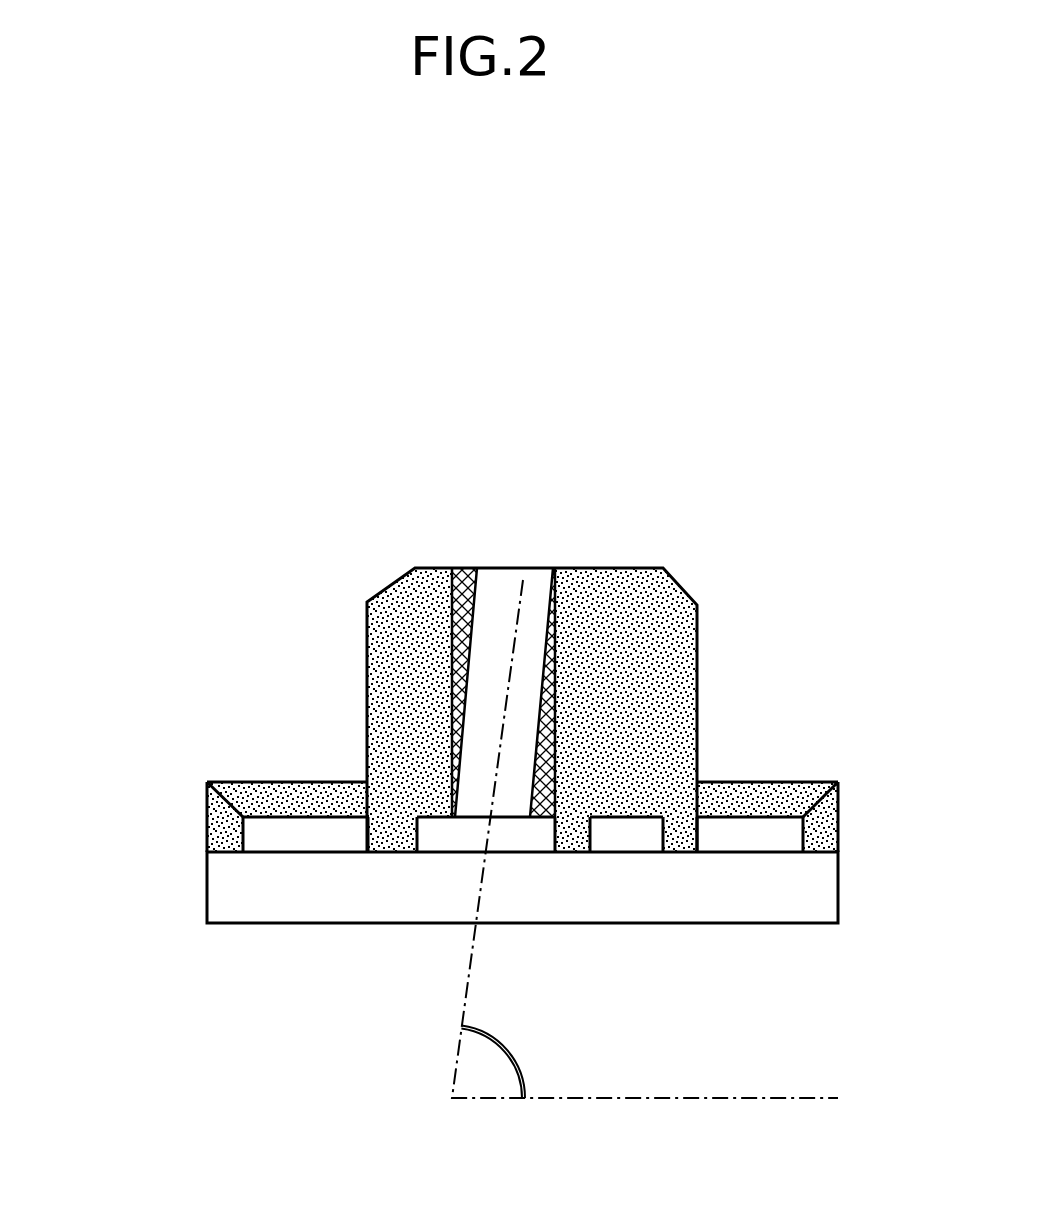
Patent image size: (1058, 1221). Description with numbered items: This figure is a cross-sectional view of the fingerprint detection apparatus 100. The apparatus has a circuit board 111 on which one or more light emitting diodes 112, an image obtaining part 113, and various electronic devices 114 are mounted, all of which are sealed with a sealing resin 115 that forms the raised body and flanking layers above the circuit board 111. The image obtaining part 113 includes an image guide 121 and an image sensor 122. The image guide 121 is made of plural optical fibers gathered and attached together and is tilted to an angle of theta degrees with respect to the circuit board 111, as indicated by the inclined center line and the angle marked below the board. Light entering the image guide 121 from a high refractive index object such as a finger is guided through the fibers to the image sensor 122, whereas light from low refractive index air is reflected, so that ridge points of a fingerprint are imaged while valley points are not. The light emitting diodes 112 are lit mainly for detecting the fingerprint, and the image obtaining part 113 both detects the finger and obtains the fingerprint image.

The fingerprint detection apparatus 100 is at (120, 227).
The circuit board 111 is at (207, 923).
The light emitting diodes 112 is at (667, 812).
The image obtaining part 113 is at (556, 713).
The electronic devices 114 is at (207, 782).
The sealing resin 115 is at (698, 638).
The image guide 121 is at (645, 774).
The image sensor 122 is at (417, 817).